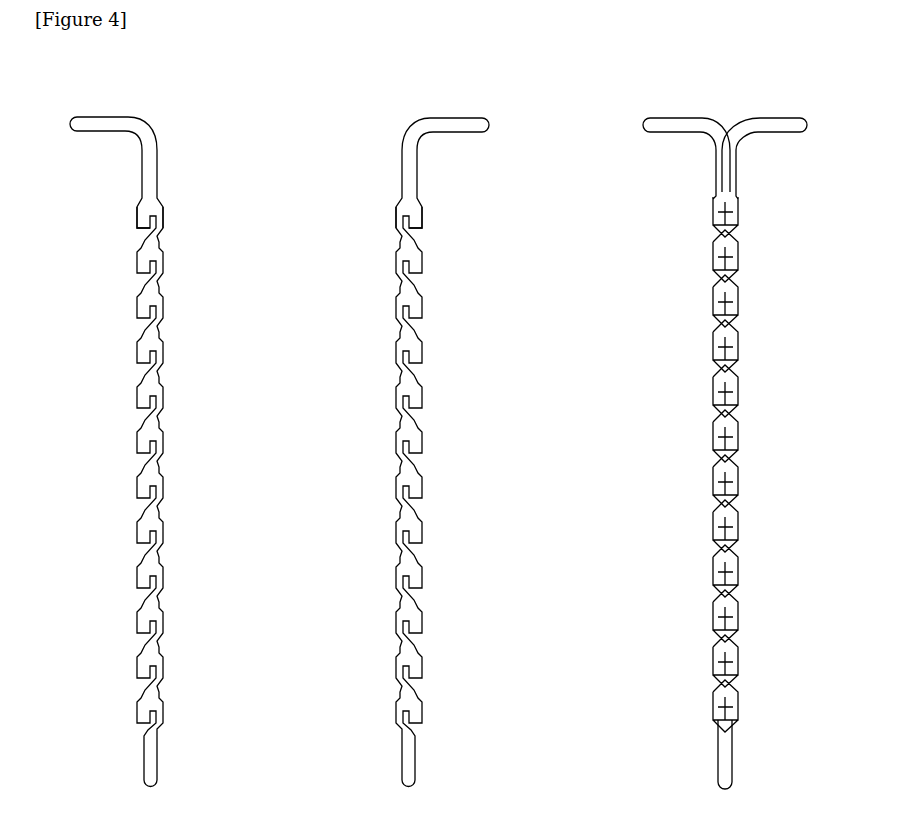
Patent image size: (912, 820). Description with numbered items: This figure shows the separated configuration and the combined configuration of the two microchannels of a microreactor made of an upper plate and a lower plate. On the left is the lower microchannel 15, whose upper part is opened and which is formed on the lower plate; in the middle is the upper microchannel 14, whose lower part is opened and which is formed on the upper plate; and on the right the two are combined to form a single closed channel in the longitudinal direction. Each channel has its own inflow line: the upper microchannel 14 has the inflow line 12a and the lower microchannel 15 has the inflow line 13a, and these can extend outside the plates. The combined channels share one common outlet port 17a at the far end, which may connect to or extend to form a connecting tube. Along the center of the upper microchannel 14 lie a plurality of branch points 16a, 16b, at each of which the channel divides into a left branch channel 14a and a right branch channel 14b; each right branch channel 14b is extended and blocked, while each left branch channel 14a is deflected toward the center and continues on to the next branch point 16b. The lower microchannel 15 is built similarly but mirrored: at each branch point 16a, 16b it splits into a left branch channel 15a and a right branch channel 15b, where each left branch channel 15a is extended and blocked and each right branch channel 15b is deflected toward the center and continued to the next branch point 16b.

The lower microchannel 15 is at (155, 115).
The inflow line 13a is at (95, 117).
The left branch channel 15a is at (137, 207).
The right branch channel 15b is at (164, 208).
The upper microchannel 14 is at (404, 118).
The inflow line 12a is at (463, 118).
The left branch channel 14a is at (396, 207).
The right branch channel 14b is at (422, 208).
The branch point 16a is at (722, 193).
The branch point 16b is at (717, 242).
The common outlet port 17a is at (718, 757).